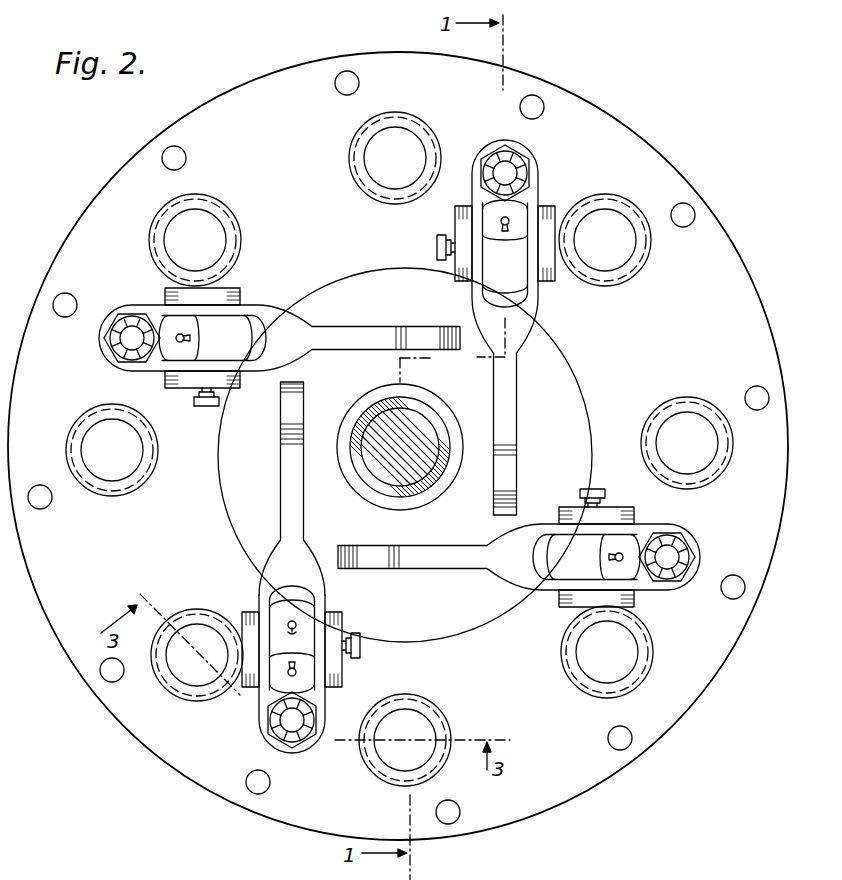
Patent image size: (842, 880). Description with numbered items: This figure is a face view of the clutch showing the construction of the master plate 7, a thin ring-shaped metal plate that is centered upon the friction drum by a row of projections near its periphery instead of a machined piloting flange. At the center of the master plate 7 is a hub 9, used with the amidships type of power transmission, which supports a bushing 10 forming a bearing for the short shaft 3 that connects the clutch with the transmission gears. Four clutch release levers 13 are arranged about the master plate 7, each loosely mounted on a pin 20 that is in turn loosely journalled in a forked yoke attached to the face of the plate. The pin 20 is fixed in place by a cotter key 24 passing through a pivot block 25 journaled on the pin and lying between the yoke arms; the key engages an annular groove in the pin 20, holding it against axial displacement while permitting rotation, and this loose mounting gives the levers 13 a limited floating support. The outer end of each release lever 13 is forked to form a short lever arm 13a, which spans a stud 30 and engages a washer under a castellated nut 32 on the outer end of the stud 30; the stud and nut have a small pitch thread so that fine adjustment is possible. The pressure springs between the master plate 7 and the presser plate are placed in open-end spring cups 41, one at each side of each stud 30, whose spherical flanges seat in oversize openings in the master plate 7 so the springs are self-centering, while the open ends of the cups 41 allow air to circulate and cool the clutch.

The short shaft 3 is at (370, 470).
The master plate 7 is at (528, 808).
The hub 9 is at (572, 427).
The bushing 10 is at (390, 496).
The clutch release lever 13 is at (343, 343).
The short lever arm 13a is at (262, 715).
The pin 20 is at (360, 655).
The cotter key 24 is at (325, 692).
The pivot block 25 is at (342, 678).
The stud 30 is at (278, 745).
The castellated nut 32 is at (300, 750).
The spring cup 41 is at (196, 700).